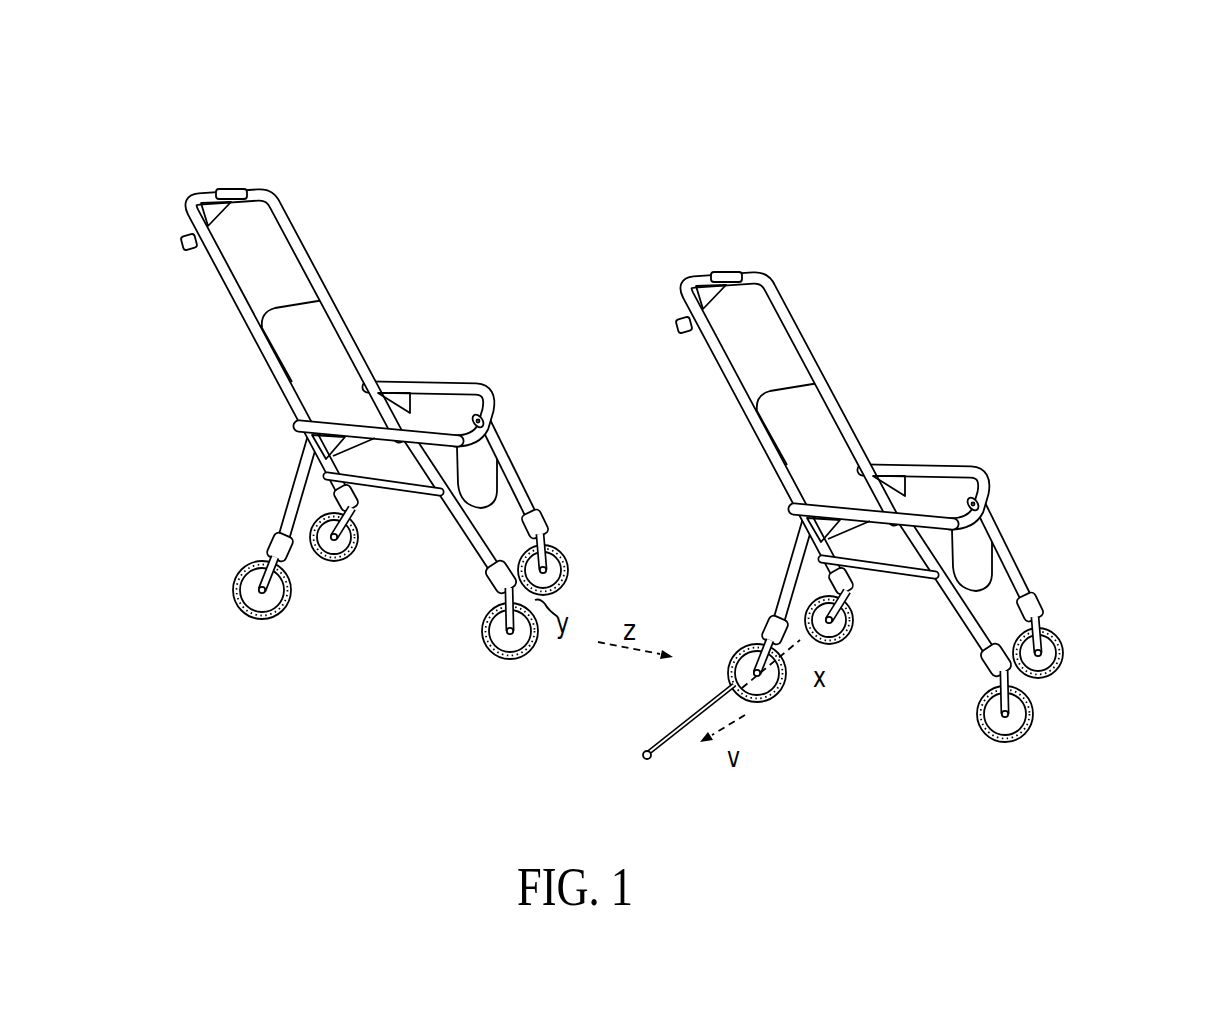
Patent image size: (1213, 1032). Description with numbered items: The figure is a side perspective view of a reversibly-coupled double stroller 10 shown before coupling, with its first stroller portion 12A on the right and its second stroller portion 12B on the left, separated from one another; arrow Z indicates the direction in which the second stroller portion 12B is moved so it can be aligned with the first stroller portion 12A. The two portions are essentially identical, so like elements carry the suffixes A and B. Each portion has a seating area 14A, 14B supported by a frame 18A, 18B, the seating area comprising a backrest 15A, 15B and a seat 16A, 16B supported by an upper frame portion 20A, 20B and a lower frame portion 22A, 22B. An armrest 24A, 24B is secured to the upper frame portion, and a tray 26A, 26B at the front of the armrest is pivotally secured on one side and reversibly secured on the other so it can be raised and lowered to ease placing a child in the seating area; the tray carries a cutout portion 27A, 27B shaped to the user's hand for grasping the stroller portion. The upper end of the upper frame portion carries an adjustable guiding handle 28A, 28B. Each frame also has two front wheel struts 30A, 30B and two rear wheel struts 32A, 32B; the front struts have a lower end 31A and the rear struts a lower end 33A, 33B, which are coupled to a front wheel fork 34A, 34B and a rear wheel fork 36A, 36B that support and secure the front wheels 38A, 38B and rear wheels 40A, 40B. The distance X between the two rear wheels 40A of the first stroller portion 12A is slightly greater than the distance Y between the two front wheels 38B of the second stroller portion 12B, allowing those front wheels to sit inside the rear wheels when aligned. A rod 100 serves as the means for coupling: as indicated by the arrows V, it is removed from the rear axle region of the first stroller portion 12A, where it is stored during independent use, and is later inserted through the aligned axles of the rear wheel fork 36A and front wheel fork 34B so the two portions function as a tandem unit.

The reversibly-coupled double stroller 10 is at (690, 115).
The first stroller portion 12A is at (985, 349).
The second stroller portion 12B is at (438, 297).
The seating area 14A is at (865, 394).
The seating area 14B is at (340, 374).
The backrest 15A is at (751, 424).
The backrest 15B is at (306, 356).
The seat 16A is at (1073, 540).
The seat 16B is at (458, 470).
The frame 18A is at (733, 539).
The frame 18B is at (290, 446).
The upper frame portion 20A is at (767, 422).
The upper frame portion 20B is at (238, 304).
The lower frame portion 22A is at (878, 608).
The lower frame portion 22B is at (395, 493).
The armrest 24A is at (873, 467).
The armrest 24B is at (365, 428).
The tray 26A is at (950, 463).
The tray 26B is at (477, 392).
The cutout portion 27A is at (1032, 491).
The cutout portion 27B is at (492, 414).
The adjustable guiding handle 28A is at (652, 288).
The adjustable guiding handle 28B is at (180, 240).
The front wheel strut 30A is at (999, 600).
The front wheel strut 30B is at (520, 492).
The lower end of front wheel strut 31A is at (1063, 589).
The rear wheel strut 32A is at (746, 567).
The rear wheel strut 32B is at (566, 544).
The lower end of rear wheel strut 33A is at (768, 606).
The lower end of rear wheel strut 33B is at (264, 543).
The front wheel fork 34A is at (1066, 662).
The front wheel fork 34B is at (482, 630).
The rear wheel fork 36A is at (814, 698).
The rear wheel fork 36B is at (235, 582).
The front wheel 38A is at (1062, 701).
The front wheel 38B is at (560, 568).
The rear wheel 40A is at (814, 689).
The rear wheel 40B is at (275, 615).
The rod 100 is at (668, 737).